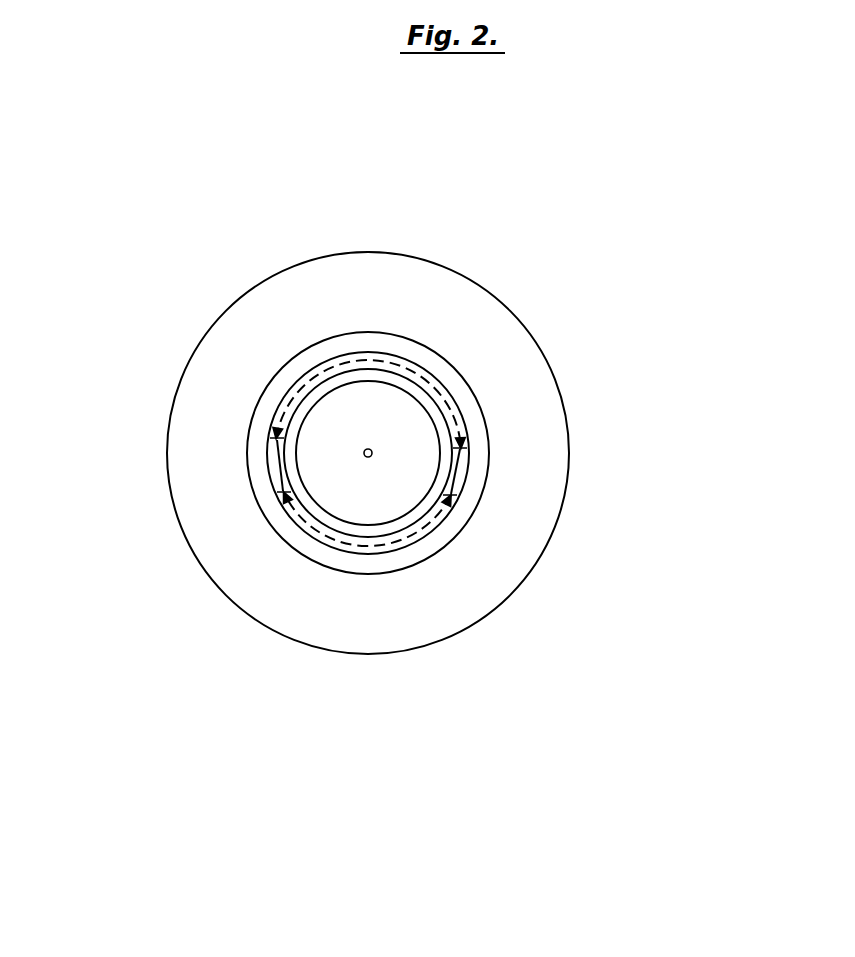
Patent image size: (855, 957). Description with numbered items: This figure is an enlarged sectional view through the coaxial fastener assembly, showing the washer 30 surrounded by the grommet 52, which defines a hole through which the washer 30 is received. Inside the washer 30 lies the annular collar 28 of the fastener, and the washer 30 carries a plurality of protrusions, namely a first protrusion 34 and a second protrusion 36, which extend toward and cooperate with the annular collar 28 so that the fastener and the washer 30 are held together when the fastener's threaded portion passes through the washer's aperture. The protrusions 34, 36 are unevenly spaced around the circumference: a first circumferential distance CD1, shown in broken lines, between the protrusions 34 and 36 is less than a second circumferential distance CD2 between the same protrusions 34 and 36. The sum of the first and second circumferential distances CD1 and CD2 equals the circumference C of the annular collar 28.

The washer 30 is at (440, 332).
The grommet 52 is at (217, 512).
The annular collar 28 is at (370, 527).
The second circumferential distance CD2 is at (372, 362).
The first circumferential distance CD1 is at (403, 539).
The first protrusion 34 is at (277, 440).
The second protrusion 36 is at (452, 485).
The circumference C is at (443, 400).